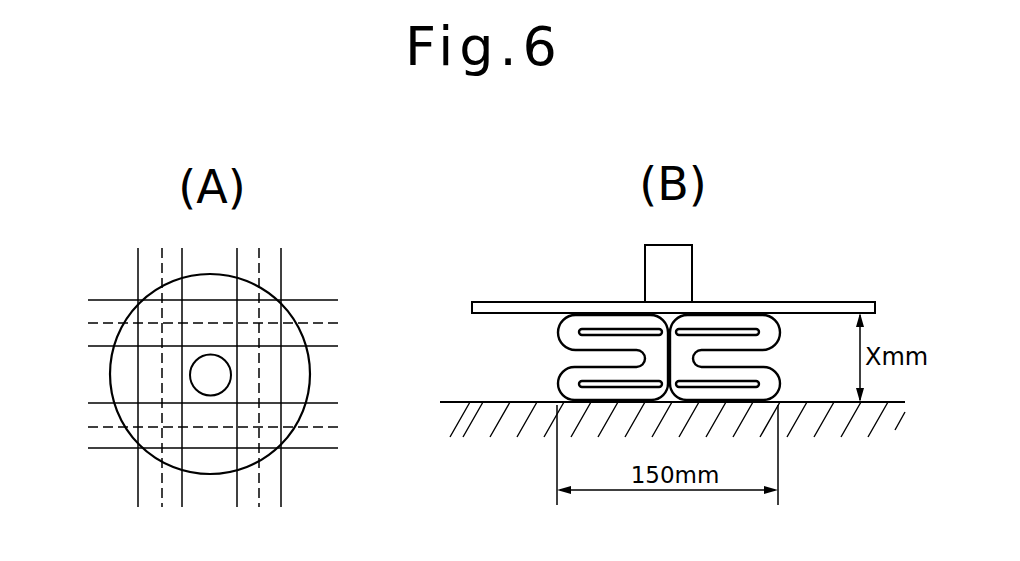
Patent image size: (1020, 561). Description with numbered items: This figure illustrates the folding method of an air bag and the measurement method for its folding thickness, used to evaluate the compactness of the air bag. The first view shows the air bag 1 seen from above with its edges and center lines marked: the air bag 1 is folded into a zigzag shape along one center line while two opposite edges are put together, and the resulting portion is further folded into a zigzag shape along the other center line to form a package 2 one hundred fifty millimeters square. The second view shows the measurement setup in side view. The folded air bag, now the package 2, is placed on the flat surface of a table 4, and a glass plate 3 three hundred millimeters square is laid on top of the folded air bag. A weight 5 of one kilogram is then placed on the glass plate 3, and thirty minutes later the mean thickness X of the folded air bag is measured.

The air bag 1 is at (307, 377).
The package 2 is at (782, 374).
The glass plate 3 is at (822, 304).
The table 4 is at (867, 420).
The weight 5 is at (683, 279).